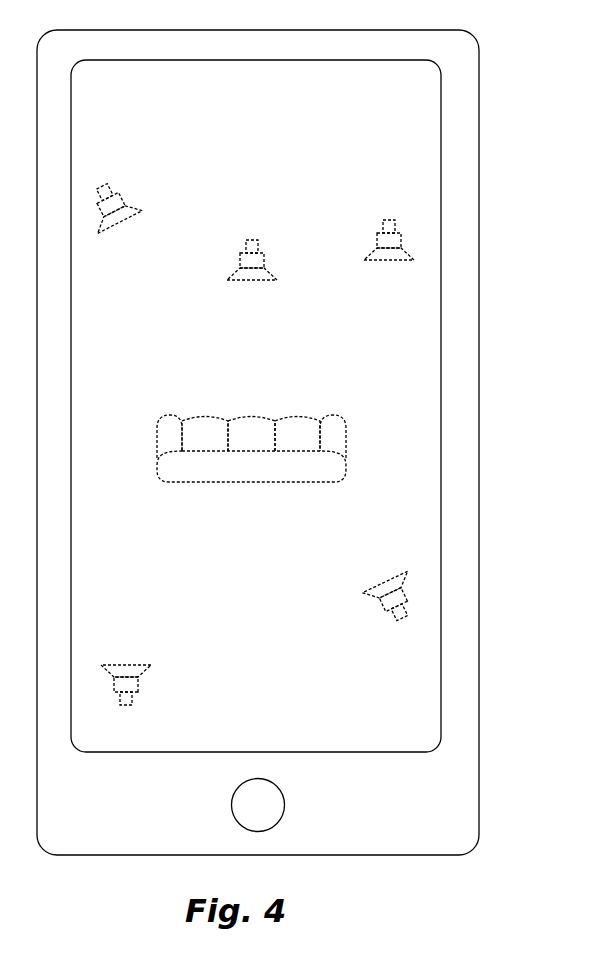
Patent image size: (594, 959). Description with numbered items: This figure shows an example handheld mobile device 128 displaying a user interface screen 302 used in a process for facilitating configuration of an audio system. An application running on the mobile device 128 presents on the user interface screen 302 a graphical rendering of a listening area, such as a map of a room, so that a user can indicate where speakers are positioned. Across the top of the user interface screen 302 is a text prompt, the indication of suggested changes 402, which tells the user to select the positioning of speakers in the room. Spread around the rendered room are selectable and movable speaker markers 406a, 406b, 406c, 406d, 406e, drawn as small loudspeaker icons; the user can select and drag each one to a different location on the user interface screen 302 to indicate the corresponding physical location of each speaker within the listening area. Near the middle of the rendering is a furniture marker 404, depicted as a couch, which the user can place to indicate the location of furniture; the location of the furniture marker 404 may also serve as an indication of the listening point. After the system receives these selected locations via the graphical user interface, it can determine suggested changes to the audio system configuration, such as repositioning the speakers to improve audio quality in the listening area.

The handheld mobile device 128 is at (432, 855).
The user interface screen 302 is at (422, 83).
The indication of suggested changes 402 is at (412, 153).
The furniture marker 404 is at (363, 442).
The speaker marker 406a is at (240, 258).
The speaker marker 406b is at (118, 196).
The speaker marker 406c is at (377, 237).
The speaker marker 406d is at (138, 683).
The speaker marker 406e is at (383, 600).